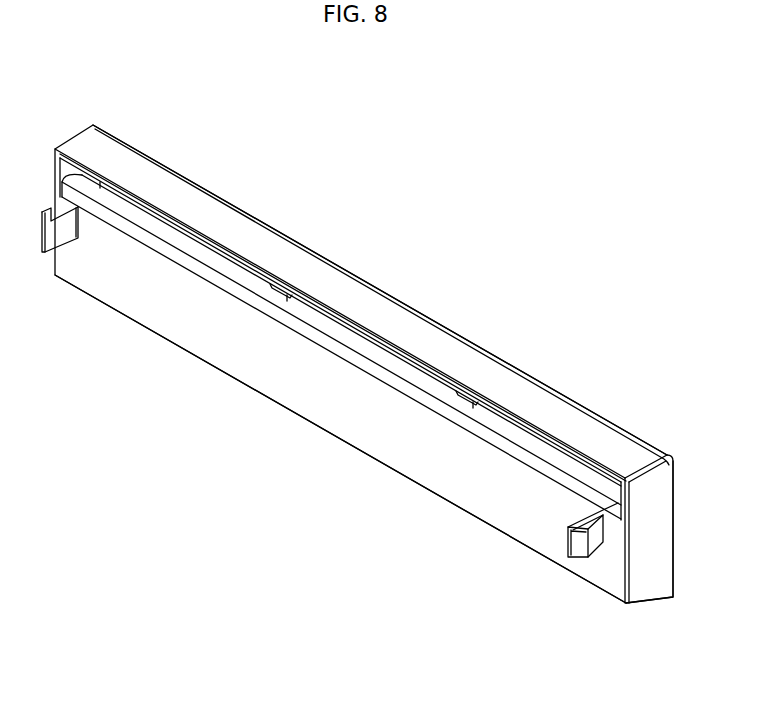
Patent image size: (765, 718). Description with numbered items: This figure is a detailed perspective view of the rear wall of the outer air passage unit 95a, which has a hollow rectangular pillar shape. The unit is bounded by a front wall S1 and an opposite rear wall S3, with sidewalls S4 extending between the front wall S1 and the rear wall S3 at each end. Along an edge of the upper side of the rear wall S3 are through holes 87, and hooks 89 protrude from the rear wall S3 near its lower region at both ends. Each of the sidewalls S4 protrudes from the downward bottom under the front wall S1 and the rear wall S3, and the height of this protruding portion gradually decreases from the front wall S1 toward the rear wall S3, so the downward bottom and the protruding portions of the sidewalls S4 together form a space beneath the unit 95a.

The outer air passage unit 95a is at (82, 89).
The front wall S1 is at (367, 283).
The rear wall S3 is at (201, 318).
The through holes 87 is at (388, 384).
The hooks 89 is at (573, 543).
The sidewalls S4 is at (645, 573).